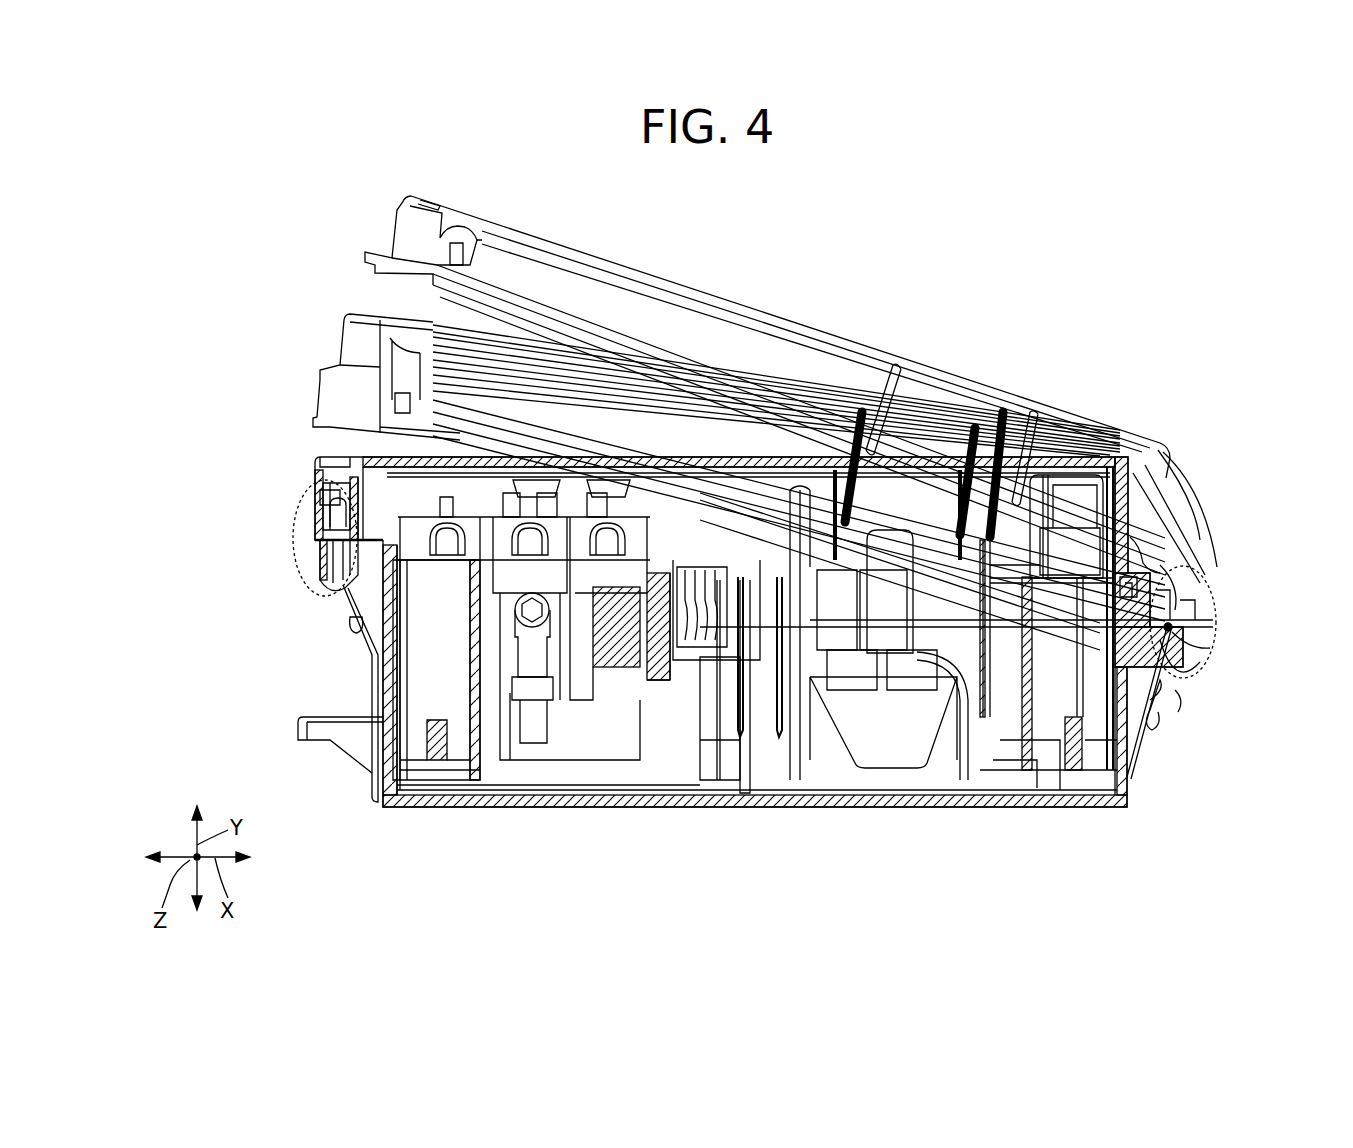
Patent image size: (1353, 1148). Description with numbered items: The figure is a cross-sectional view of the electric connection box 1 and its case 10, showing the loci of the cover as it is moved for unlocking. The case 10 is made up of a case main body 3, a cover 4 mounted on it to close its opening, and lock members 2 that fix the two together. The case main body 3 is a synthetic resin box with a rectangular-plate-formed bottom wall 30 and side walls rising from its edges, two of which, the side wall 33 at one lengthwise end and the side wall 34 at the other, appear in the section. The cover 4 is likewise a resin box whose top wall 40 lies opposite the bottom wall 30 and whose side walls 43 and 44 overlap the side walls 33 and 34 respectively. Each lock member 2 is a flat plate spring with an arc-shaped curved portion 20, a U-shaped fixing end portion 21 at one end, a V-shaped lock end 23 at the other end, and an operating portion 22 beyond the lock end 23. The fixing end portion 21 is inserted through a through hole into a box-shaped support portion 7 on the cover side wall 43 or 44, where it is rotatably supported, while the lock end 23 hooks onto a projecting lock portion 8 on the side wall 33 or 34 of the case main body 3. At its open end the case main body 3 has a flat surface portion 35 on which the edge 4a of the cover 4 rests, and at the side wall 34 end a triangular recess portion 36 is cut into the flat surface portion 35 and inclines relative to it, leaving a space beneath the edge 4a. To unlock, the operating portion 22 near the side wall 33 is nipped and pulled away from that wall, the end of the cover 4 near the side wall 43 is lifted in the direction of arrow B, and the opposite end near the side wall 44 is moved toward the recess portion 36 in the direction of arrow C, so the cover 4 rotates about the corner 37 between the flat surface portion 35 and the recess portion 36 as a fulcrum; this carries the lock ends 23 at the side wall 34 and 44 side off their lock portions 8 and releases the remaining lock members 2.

The electric connection box 1 is at (1148, 188).
The lock member 2 is at (292, 522).
The case main body 3 is at (1072, 812).
The cover 4 is at (928, 460).
The edge of the cover 4a is at (1172, 627).
The support portion 7 is at (318, 476).
The lock portion 8 is at (318, 588).
The case 10 is at (878, 340).
The curved portion 20 is at (292, 540).
The fixing end portion 21 is at (330, 468).
The operating portion 22 is at (352, 632).
The lock end 23 is at (320, 595).
The bottom wall 30 is at (733, 810).
The side wall 33 is at (387, 707).
The side wall 34 is at (1130, 780).
The flat surface portion 35 is at (1173, 702).
The recess portion 36 is at (1193, 673).
The corner 37 is at (1200, 663).
The top wall 40 is at (752, 455).
The side wall 43 is at (310, 482).
The side wall 44 is at (1127, 553).
The arrow B is at (348, 455).
The arrow C is at (1217, 582).